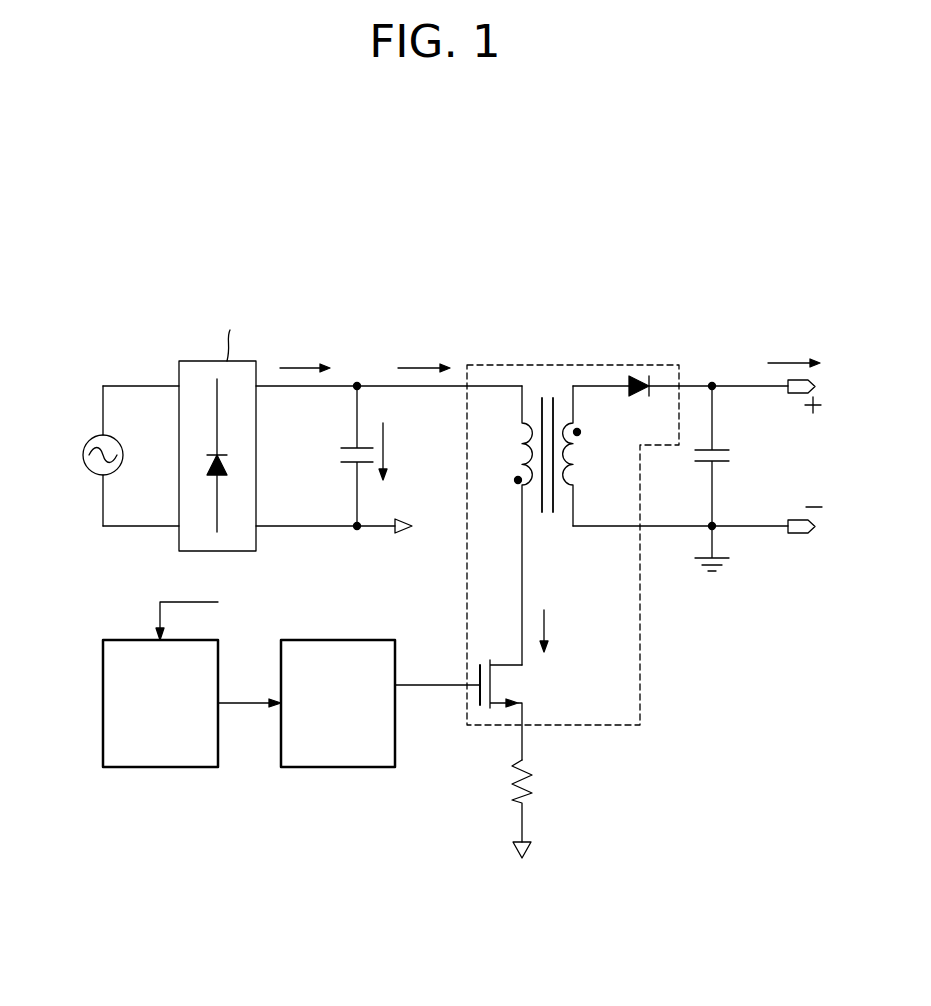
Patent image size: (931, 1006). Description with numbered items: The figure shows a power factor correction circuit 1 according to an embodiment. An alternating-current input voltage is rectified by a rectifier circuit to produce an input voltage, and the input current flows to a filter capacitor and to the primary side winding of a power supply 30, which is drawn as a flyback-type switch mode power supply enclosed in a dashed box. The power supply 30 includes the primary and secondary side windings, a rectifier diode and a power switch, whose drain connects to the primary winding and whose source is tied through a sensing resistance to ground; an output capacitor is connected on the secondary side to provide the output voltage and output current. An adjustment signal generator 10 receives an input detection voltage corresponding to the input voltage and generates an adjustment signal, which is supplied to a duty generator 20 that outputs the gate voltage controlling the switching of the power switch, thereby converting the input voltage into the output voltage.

The power factor correction circuit 1 is at (714, 298).
The adjustment signal generator 10 is at (160, 767).
The duty generator 20 is at (354, 640).
The power supply 30 is at (564, 365).